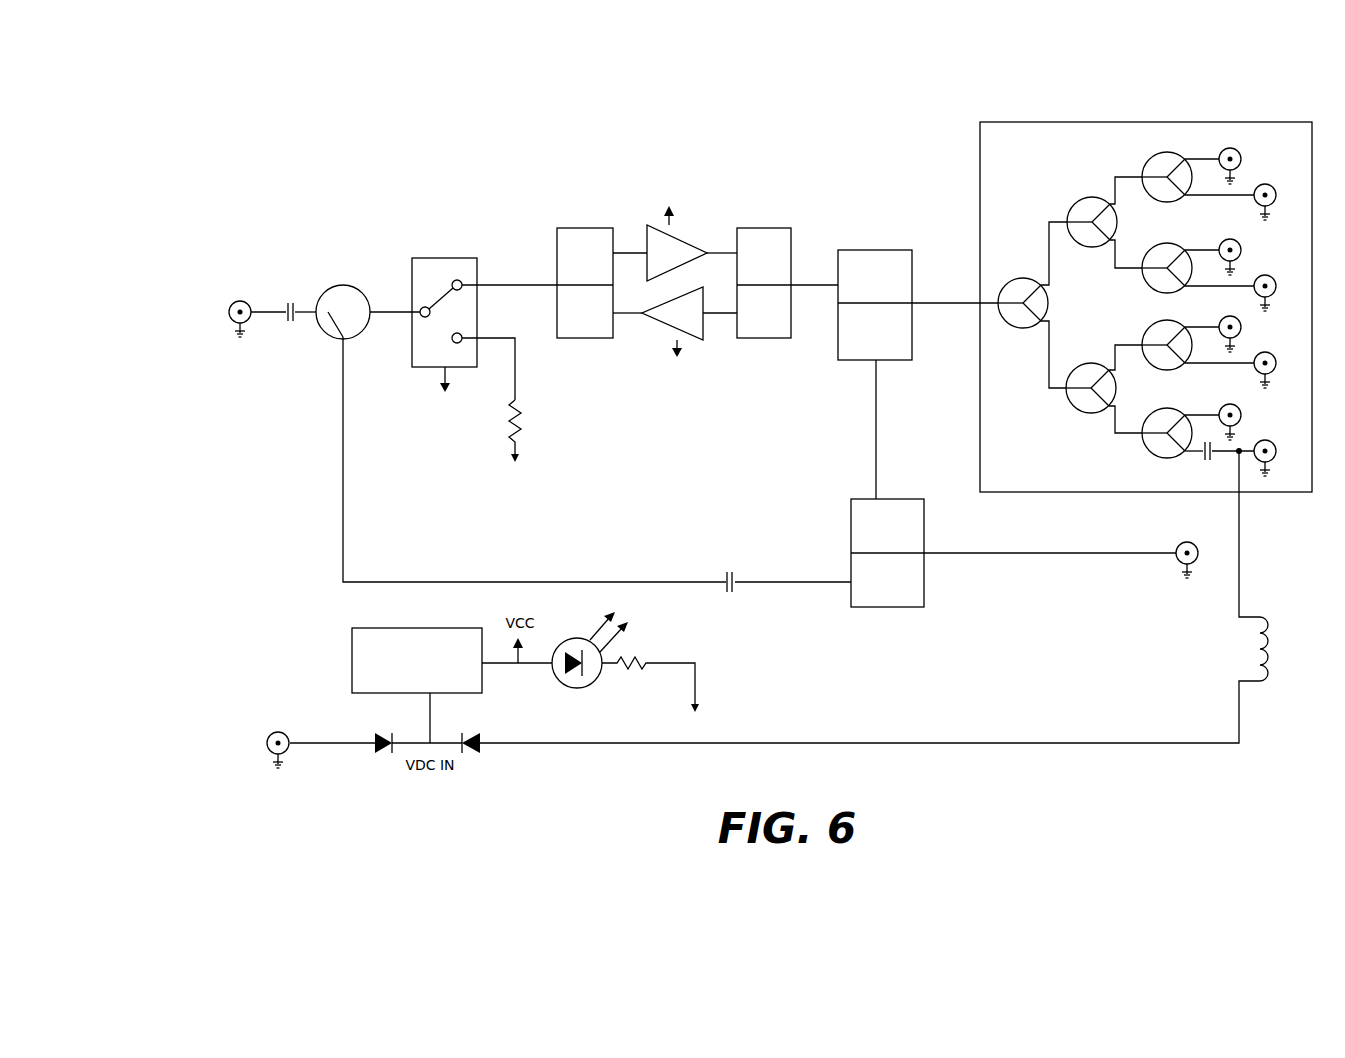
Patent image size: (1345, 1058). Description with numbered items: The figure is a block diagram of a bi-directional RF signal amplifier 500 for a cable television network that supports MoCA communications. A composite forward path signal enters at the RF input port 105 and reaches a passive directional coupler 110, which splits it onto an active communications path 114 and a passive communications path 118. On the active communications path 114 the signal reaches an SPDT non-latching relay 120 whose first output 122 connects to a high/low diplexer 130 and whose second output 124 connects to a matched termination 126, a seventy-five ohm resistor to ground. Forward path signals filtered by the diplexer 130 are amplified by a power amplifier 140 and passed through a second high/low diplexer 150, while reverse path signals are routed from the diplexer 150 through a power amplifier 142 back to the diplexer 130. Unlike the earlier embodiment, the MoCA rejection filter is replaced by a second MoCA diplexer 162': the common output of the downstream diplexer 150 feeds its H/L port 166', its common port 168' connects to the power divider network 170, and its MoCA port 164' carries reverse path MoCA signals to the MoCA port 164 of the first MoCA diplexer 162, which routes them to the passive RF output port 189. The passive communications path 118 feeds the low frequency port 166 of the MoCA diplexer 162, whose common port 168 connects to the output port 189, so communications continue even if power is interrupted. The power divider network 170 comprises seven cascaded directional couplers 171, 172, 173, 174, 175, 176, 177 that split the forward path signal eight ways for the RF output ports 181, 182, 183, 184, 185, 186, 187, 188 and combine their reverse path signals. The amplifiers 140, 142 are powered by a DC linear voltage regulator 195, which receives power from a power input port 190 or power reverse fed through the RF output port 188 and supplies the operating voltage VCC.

The bi-directional RF signal amplifier 500 is at (426, 117).
The RF input port 105 is at (227, 323).
The directional coupler 110 is at (343, 283).
The relay 120 is at (444, 309).
The first output 122 is at (509, 274).
The second output 124 is at (488, 369).
The matched termination 126 is at (528, 431).
The high/low diplexer 130 is at (585, 261).
The power amplifier 140 is at (675, 235).
The power amplifier 142 is at (675, 331).
The second high/low diplexer 150 is at (764, 261).
The active communications path 114 is at (704, 402).
The passive communications path 118 is at (537, 464).
The second MoCA diplexer 162' is at (875, 282).
The H/L port 166' is at (814, 274).
The common port 168' is at (955, 313).
The MoCA port 164' is at (895, 429).
The MoCA diplexer 162 is at (887, 576).
The high frequency port 164 is at (897, 490).
The low frequency port 166 is at (793, 569).
The common port 168 is at (1050, 545).
The power divider network 170 is at (1146, 286).
The directional coupler 171 is at (1026, 329).
The directional coupler 172 is at (1073, 203).
The directional coupler 173 is at (1077, 410).
The directional coupler 174 is at (1151, 160).
The directional coupler 175 is at (1149, 284).
The directional coupler 176 is at (1148, 335).
The directional coupler 177 is at (1150, 452).
The RF output port 181 is at (1218, 160).
The RF output port 182 is at (1263, 195).
The RF output port 183 is at (1218, 251).
The RF output port 184 is at (1263, 285).
The RF output port 185 is at (1218, 328).
The RF output port 186 is at (1263, 364).
The RF output port 187 is at (1218, 417).
The RF output port 188 is at (1276, 440).
The passive RF output port 189 is at (1192, 551).
The power input port 190 is at (265, 752).
The voltage regulator 195 is at (444, 628).